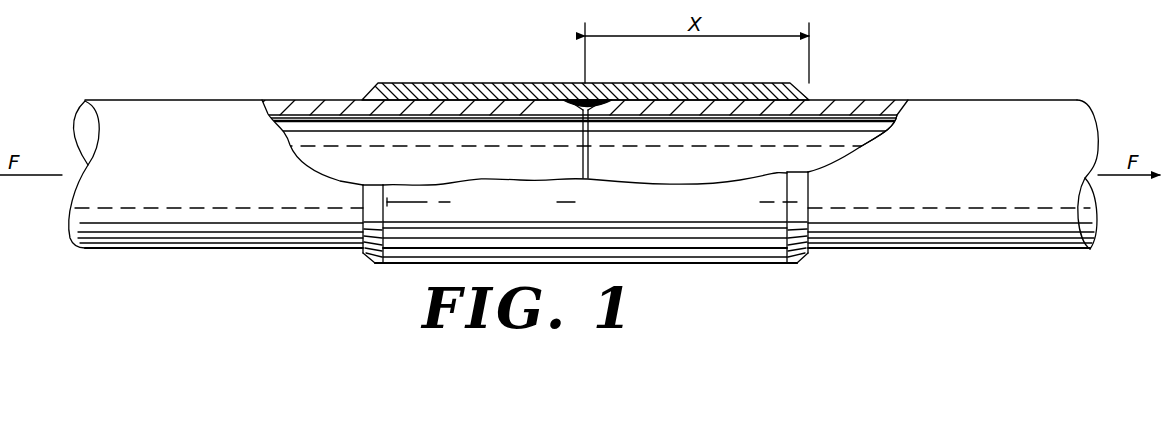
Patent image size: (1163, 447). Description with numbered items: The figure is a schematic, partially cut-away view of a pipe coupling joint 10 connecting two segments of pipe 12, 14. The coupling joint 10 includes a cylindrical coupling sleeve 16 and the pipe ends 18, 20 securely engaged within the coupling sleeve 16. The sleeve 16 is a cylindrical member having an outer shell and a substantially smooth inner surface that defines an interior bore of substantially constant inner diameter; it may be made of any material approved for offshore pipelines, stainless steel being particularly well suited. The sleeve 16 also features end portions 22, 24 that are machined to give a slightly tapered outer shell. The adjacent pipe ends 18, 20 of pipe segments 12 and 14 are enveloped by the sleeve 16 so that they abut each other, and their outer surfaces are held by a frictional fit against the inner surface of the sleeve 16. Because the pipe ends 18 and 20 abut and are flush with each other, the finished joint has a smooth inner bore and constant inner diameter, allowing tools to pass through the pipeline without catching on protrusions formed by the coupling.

The pipe coupling joint 10 is at (585, 153).
The pipe segment 12 is at (1004, 103).
The pipe segment 14 is at (116, 103).
The coupling sleeve 16 is at (733, 88).
The pipe end 18 is at (596, 140).
The pipe end 20 is at (570, 140).
The end portion of sleeve 22 is at (800, 88).
The end portion of sleeve 24 is at (366, 93).